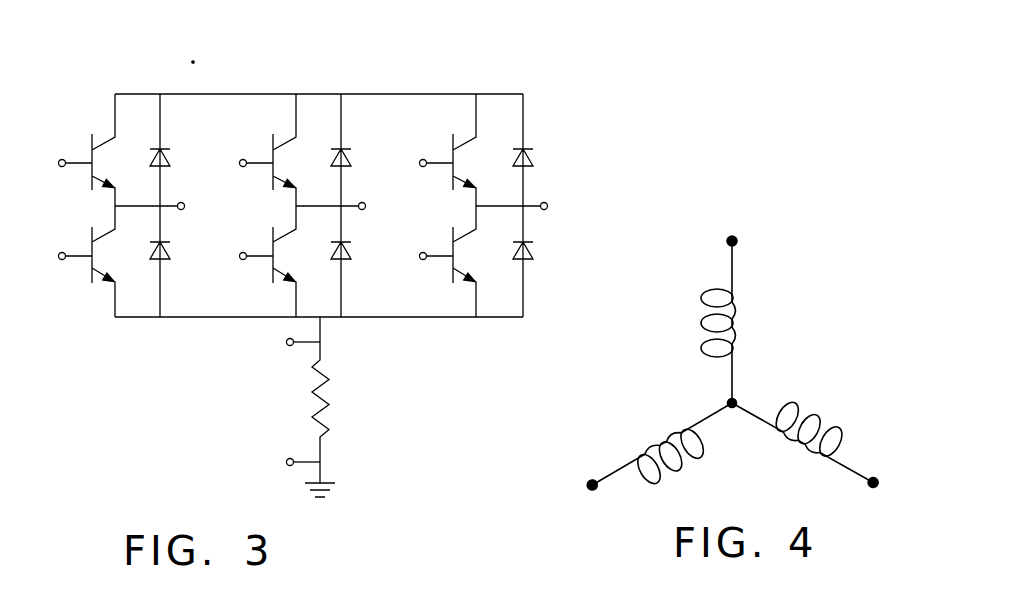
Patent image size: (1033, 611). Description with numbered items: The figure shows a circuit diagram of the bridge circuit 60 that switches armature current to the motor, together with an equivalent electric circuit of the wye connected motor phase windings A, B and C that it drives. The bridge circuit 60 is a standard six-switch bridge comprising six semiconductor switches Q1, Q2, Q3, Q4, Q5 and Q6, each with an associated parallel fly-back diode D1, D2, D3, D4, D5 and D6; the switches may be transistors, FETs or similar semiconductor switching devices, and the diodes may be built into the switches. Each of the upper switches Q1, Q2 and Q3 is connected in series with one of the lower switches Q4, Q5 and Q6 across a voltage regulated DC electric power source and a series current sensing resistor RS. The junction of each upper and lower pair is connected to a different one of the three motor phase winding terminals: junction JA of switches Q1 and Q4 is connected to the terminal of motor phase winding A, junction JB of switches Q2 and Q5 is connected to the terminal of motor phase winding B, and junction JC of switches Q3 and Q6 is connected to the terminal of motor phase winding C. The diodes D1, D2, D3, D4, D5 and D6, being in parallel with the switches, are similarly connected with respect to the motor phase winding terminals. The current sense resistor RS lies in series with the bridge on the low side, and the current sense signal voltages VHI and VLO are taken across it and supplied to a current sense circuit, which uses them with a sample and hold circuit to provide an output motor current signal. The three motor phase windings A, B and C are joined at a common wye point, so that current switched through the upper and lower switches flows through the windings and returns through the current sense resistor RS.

In FIG. 3, the bridge circuit 60 is at (536, 78).
In FIG. 3, the semiconductor switch Q1 is at (90, 152).
In FIG. 3, the semiconductor switch Q2 is at (261, 150).
In FIG. 3, the semiconductor switch Q3 is at (441, 150).
In FIG. 3, the semiconductor switch Q4 is at (90, 242).
In FIG. 3, the semiconductor switch Q5 is at (261, 254).
In FIG. 3, the semiconductor switch Q6 is at (441, 254).
In FIG. 3, the fly-back diode D1 is at (168, 162).
In FIG. 3, the fly-back diode D2 is at (360, 150).
In FIG. 3, the fly-back diode D3 is at (540, 150).
In FIG. 3, the fly-back diode D4 is at (168, 256).
In FIG. 3, the fly-back diode D5 is at (357, 263).
In FIG. 3, the fly-back diode D6 is at (540, 263).
In FIG. 3, the junction JA is at (164, 211).
In FIG. 3, the junction JB is at (345, 211).
In FIG. 3, the junction JC is at (526, 211).
In FIG. 3, the current sense signal voltage VHI is at (276, 348).
In FIG. 3, the current sense signal voltage VLO is at (276, 466).
In FIG. 3, the current sense resistor RS is at (335, 407).
In FIG. 4, the motor phase winding A is at (738, 319).
In FIG. 4, the motor phase winding B is at (815, 432).
In FIG. 4, the motor phase winding C is at (663, 457).